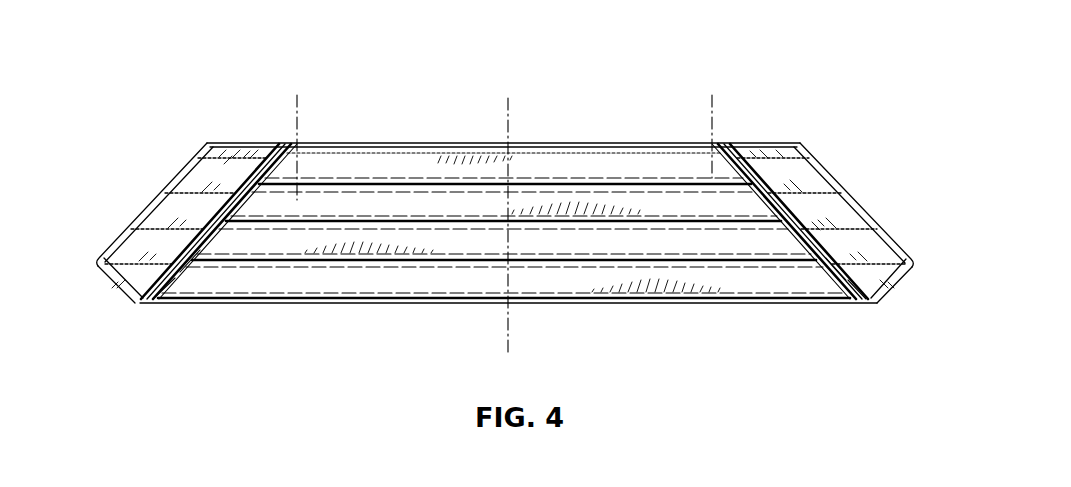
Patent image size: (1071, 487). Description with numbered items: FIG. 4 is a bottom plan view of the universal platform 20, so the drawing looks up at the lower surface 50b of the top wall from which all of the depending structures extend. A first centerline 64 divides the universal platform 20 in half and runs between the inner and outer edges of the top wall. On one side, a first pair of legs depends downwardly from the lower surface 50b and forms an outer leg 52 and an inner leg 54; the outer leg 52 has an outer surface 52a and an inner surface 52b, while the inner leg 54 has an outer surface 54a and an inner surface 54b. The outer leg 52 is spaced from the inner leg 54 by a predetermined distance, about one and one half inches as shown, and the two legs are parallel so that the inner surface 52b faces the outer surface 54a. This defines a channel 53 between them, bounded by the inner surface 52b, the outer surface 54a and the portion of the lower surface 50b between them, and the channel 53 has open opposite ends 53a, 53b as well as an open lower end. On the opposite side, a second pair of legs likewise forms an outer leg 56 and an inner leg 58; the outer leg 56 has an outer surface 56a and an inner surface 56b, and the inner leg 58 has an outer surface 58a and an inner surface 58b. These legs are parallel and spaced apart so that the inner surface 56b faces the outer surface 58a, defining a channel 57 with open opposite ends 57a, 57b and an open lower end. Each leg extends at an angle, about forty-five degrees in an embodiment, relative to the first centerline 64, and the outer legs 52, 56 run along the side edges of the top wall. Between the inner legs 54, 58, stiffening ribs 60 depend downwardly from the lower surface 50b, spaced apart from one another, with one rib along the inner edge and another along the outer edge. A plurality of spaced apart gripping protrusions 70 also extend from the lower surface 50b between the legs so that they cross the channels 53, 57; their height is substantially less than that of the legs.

The universal platform 20 is at (728, 50).
The lower surface 50b is at (419, 198).
The outer leg 52 is at (161, 222).
The outer surface 52a is at (140, 213).
The inner surface 52b is at (104, 268).
The channel 53 is at (212, 168).
The open end 53a is at (268, 140).
The open end 53b is at (112, 290).
The inner leg 54 is at (214, 218).
The outer surface 54a is at (150, 272).
The inner surface 54b is at (183, 268).
The outer leg 56 is at (855, 250).
The outer surface 56a is at (897, 240).
The inner surface 56b is at (907, 272).
The channel 57 is at (832, 208).
The open end 57a is at (782, 142).
The open end 57b is at (900, 282).
The inner leg 58 is at (814, 224).
The outer surface 58a is at (870, 284).
The inner surface 58b is at (845, 285).
The stiffening rib 60 is at (583, 180).
The first centerline 64 is at (510, 137).
The gripping protrusion 70 is at (252, 143).